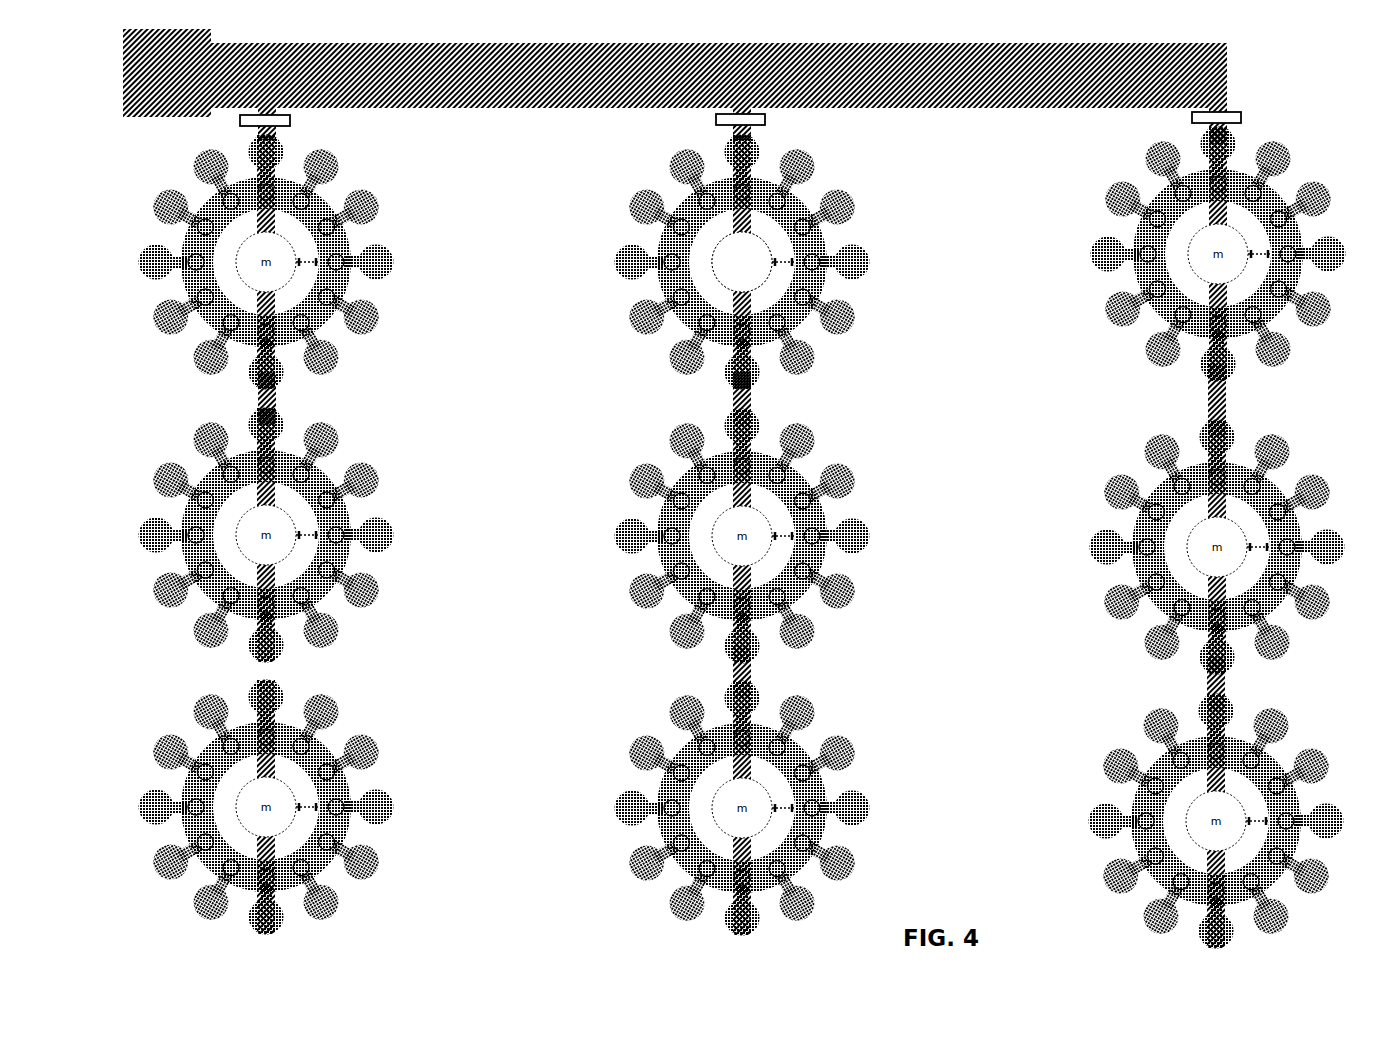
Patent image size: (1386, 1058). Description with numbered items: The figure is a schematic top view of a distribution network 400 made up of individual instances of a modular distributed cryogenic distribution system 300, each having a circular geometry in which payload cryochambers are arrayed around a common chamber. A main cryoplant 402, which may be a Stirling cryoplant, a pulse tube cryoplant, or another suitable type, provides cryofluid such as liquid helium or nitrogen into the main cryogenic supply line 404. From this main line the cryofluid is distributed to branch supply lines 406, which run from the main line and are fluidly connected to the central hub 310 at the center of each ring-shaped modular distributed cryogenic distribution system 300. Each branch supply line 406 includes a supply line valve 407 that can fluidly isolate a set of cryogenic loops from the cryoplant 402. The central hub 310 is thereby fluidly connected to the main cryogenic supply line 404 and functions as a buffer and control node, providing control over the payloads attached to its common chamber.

The distribution network 400 is at (734, 489).
The main cryoplant 402 is at (167, 73).
The main cryogenic supply line 404 is at (719, 75).
The branch supply line 406 is at (698, 141).
The supply line valve 407 is at (769, 120).
The modular distributed cryogenic distribution system 300 is at (604, 250).
The central hub 310 is at (759, 274).